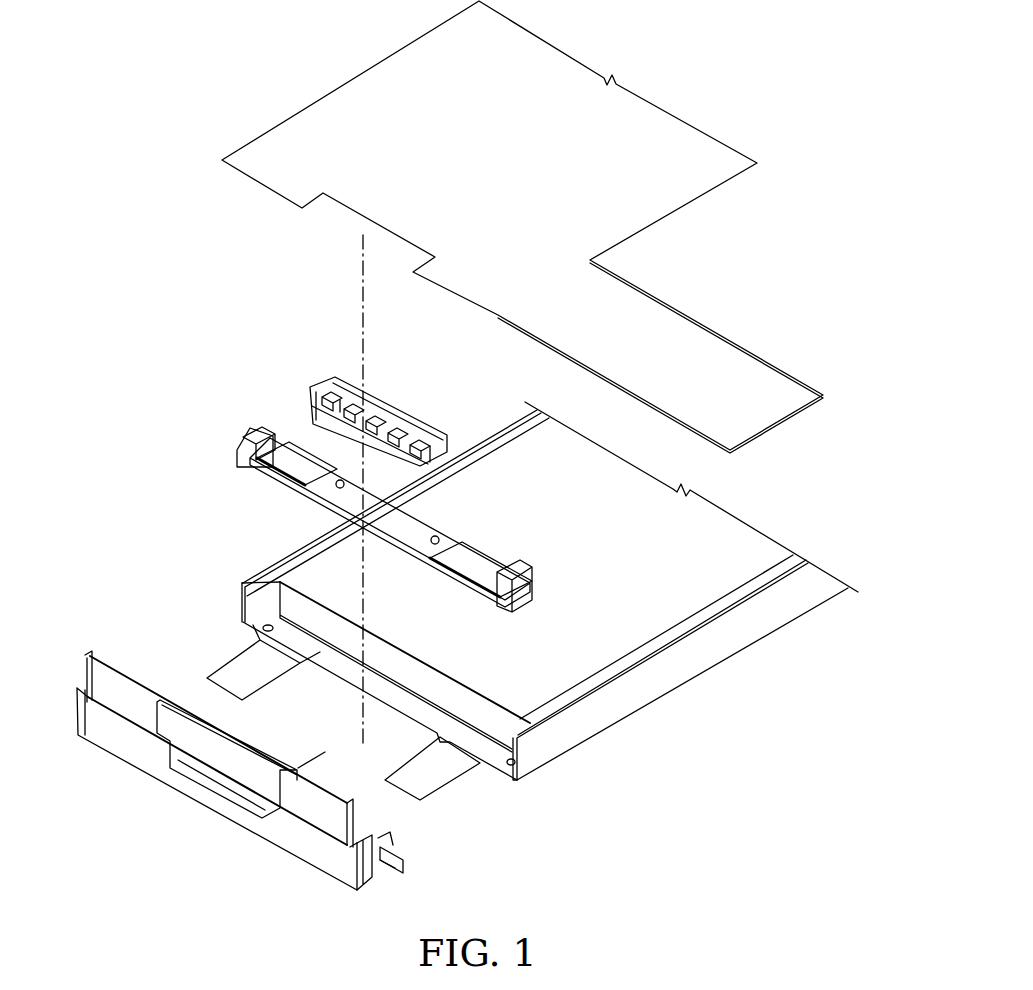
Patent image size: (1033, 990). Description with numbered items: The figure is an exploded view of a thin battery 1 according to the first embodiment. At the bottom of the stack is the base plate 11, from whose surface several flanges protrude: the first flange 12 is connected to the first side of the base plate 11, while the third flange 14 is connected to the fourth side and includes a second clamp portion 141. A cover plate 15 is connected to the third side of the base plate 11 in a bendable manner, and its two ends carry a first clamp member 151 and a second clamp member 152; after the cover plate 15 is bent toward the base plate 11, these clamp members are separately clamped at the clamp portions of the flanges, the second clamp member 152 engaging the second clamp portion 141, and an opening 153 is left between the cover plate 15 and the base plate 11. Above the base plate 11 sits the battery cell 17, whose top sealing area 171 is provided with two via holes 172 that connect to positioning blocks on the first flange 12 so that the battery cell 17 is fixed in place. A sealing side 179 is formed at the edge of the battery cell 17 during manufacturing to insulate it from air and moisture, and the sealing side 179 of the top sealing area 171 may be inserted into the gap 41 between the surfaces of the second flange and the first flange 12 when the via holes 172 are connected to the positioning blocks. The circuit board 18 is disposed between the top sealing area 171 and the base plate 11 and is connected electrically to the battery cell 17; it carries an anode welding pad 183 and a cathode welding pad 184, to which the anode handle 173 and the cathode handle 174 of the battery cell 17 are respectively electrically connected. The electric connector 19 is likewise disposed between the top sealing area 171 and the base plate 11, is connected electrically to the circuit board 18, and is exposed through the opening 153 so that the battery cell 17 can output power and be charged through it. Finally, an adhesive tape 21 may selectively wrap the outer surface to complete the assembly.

The thin battery 1 is at (207, 80).
The adhesive tape 21 is at (375, 97).
The electric connector 19 is at (335, 386).
The circuit board 18 is at (380, 528).
The cathode welding pad 184 is at (292, 468).
The anode welding pad 183 is at (470, 568).
The battery cell 17 is at (501, 627).
The top sealing area 171 is at (362, 675).
The via hole 172 is at (267, 620).
The anode handle 173 is at (430, 776).
The cathode handle 174 is at (243, 656).
The sealing side 179 is at (240, 597).
The cover plate 15 is at (245, 713).
The second clamp member 152 is at (90, 648).
The opening 153 is at (222, 773).
The first clamp member 151 is at (350, 800).
The base plate 11 is at (133, 745).
The first flange 12 is at (360, 835).
The third flange 14 is at (387, 867).
The second clamp portion 141 is at (388, 838).
The gap 41 is at (385, 872).